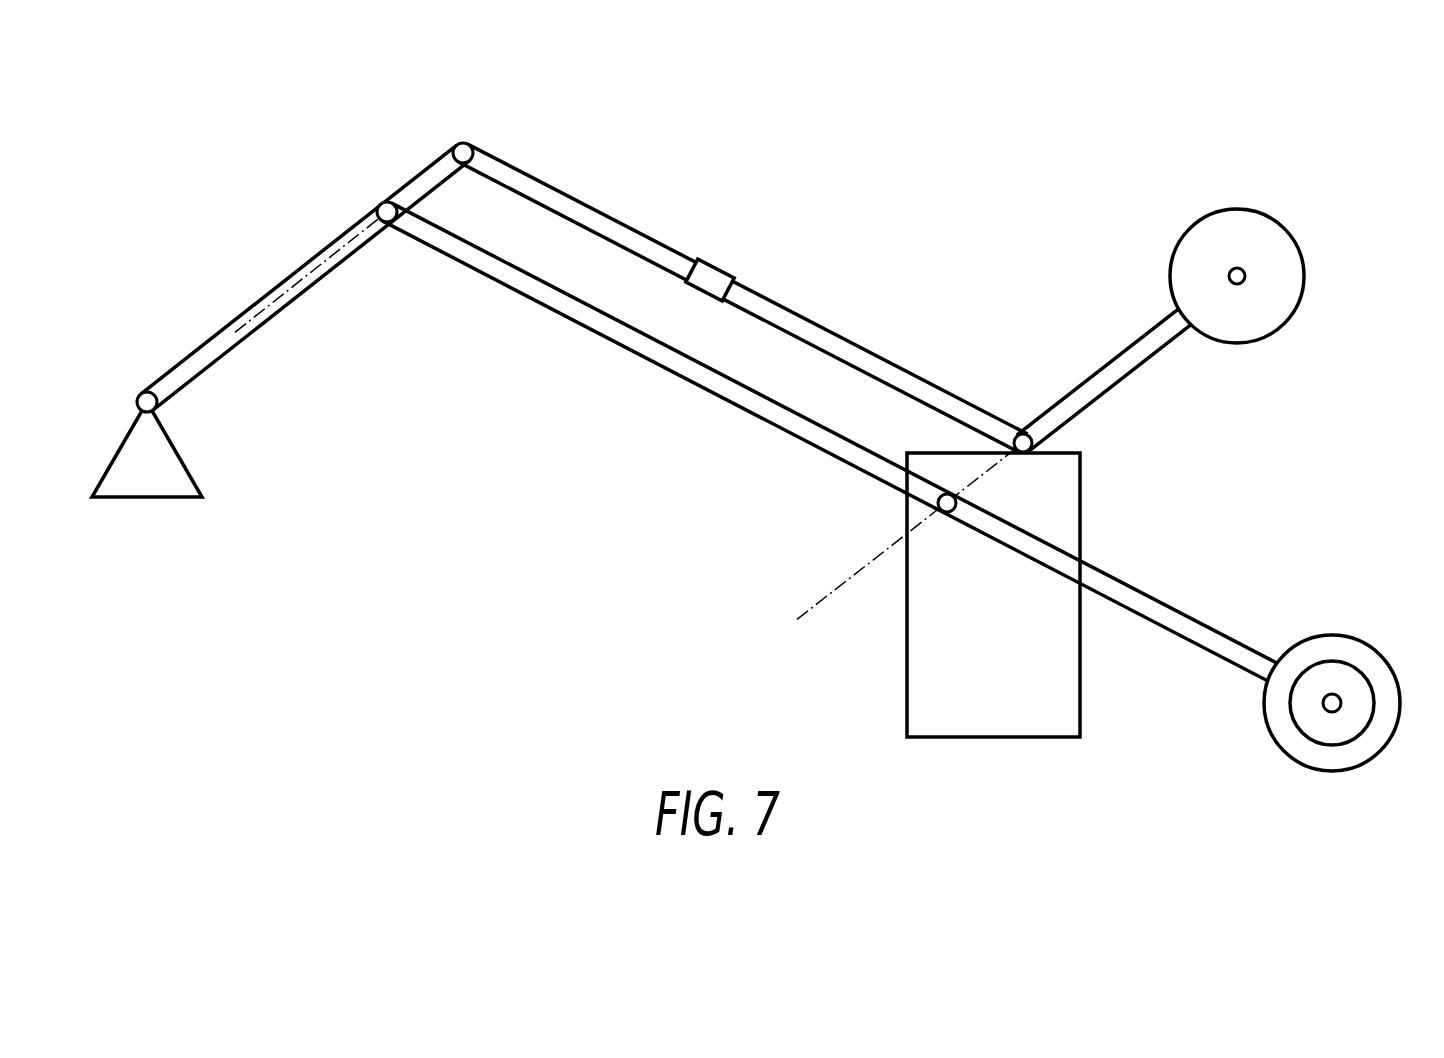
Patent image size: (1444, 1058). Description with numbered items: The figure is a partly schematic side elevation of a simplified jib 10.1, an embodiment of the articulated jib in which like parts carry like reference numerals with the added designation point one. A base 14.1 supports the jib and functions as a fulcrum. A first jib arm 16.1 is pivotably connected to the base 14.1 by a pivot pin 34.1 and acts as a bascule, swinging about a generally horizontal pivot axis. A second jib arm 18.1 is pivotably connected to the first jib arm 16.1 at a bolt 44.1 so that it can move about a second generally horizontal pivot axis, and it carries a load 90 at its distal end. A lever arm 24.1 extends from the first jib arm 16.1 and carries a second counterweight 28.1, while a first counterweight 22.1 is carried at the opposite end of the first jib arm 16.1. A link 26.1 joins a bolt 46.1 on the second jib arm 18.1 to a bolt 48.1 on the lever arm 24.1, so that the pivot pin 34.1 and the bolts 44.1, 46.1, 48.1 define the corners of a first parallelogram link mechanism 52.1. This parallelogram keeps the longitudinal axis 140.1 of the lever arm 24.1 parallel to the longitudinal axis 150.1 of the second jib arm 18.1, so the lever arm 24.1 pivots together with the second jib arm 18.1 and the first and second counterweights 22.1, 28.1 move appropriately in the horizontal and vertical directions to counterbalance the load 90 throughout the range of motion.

The jib 10.1 is at (330, 139).
The base 14.1 is at (952, 675).
The first jib arm 16.1 is at (683, 377).
The second jib arm 18.1 is at (280, 317).
The first counterweight 22.1 is at (1330, 650).
The lever arm 24.1 is at (1130, 360).
The link 26.1 is at (767, 300).
The second counterweight 28.1 is at (1283, 272).
The pivot pin 34.1 is at (935, 495).
The bolt 44.1 is at (397, 223).
The bolt 46.1 is at (467, 142).
The bolt 48.1 is at (1037, 428).
The first parallelogram link mechanism 52.1 is at (737, 344).
The load 90 is at (158, 460).
The longitudinal axis of the lever arm 140.1 is at (830, 595).
The longitudinal axis of the second jib arm 150.1 is at (298, 278).